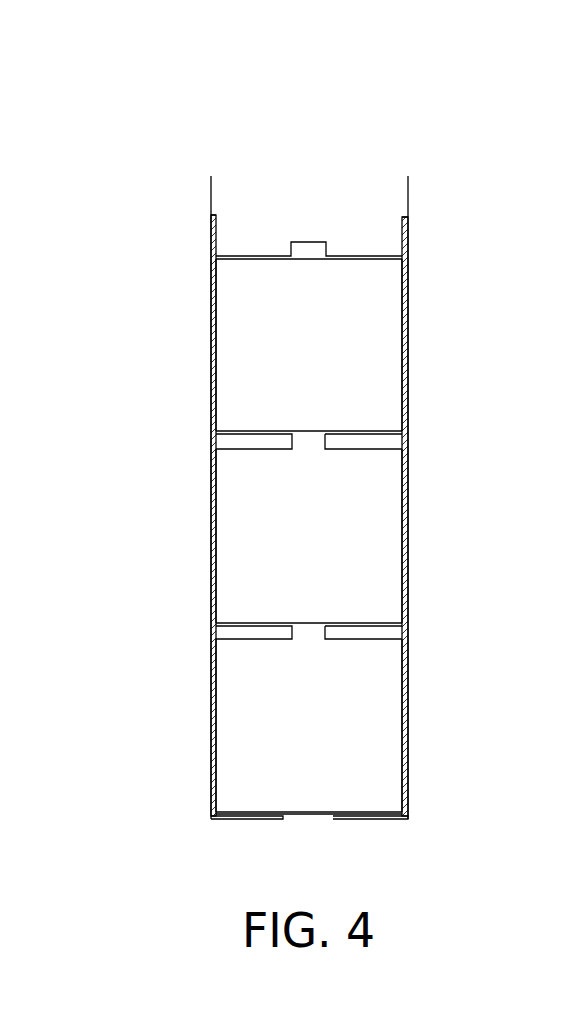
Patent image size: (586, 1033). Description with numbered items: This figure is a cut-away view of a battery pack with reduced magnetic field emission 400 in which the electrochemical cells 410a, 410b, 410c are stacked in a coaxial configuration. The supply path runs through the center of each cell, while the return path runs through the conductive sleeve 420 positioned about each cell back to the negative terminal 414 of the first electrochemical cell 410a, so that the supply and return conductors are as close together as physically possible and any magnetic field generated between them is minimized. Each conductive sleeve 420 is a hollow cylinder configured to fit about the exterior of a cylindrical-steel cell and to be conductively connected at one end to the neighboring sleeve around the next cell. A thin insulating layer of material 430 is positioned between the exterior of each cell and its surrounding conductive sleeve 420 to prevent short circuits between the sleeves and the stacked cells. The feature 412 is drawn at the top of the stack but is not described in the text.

The battery pack with reduced magnetic field emission 400 is at (121, 100).
The thin insulating layer of material 430 is at (408, 238).
The conductive sleeve 420 is at (408, 308).
The top plate with boss 412 is at (307, 241).
The negative terminal 414 is at (384, 434).
The first electrochemical cell 410a is at (372, 757).
The second electrochemical cell 410b is at (372, 567).
The third electrochemical cell 410c is at (372, 378).